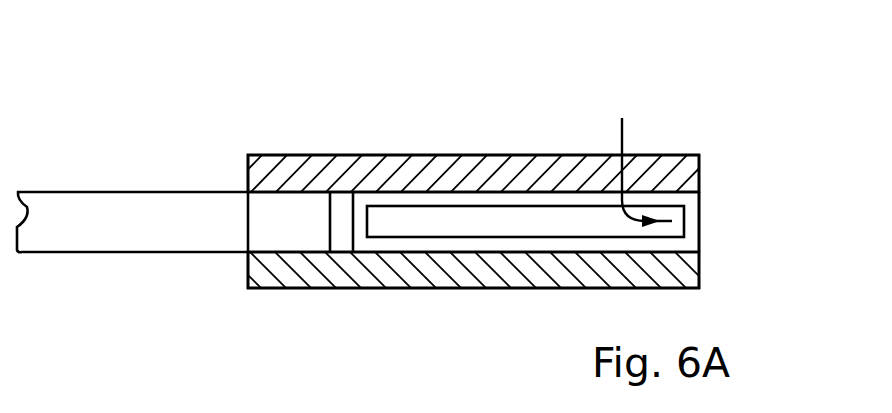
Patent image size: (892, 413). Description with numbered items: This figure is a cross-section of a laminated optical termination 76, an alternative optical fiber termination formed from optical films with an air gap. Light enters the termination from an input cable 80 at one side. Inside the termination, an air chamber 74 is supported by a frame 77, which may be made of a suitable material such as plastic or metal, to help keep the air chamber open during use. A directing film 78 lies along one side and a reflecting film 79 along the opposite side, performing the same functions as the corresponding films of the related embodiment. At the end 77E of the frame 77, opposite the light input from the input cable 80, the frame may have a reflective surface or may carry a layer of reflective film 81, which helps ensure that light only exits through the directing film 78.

The laminated optical termination 76 is at (276, 88).
The input cable 80 is at (165, 240).
The directing film 78 is at (496, 166).
The reflecting film 79 is at (365, 278).
The frame 77 is at (504, 205).
The air chamber 74 is at (501, 231).
The end of frame 77E is at (688, 228).
The layer of reflective film 81 is at (640, 161).